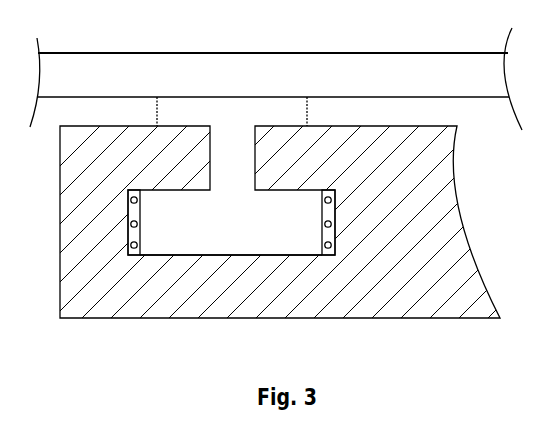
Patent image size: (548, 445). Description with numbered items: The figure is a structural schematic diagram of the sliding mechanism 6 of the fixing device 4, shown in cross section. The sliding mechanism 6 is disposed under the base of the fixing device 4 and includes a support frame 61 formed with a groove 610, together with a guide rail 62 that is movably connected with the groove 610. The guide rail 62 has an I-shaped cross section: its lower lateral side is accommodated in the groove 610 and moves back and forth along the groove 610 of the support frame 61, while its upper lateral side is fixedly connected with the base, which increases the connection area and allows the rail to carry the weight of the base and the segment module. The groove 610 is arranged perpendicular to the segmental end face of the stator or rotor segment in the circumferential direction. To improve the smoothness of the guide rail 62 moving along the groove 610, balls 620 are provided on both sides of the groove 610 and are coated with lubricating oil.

The fixing device 4 is at (376, 65).
The sliding mechanism 6 is at (244, 31).
The support frame 61 is at (455, 253).
The groove 610 is at (279, 255).
The guide rail 62 is at (316, 217).
The ball 620 is at (128, 192).